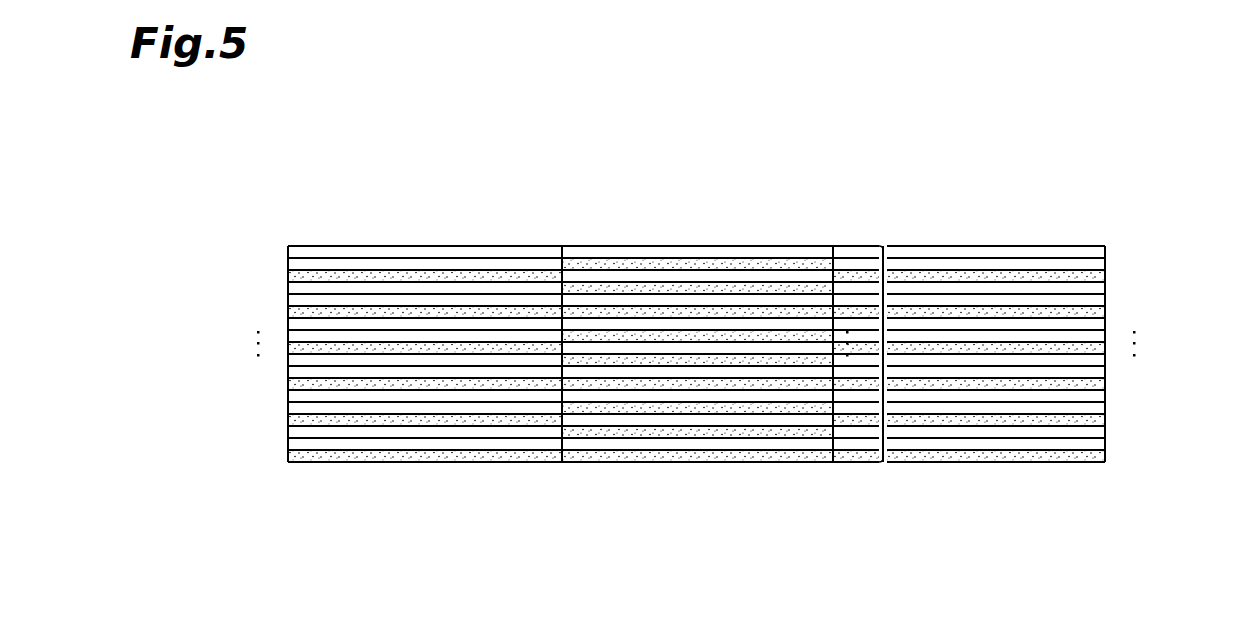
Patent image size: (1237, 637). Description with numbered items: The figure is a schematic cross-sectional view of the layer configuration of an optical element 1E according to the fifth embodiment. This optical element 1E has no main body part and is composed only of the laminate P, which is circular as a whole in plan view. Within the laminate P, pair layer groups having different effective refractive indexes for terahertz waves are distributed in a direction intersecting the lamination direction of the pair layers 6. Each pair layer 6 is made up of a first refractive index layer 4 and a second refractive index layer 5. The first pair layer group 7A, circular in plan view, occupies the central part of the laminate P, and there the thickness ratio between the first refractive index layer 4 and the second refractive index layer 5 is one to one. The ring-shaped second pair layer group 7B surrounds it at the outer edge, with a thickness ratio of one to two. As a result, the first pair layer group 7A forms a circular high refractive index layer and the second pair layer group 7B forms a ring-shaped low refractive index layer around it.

The optical element 1E is at (346, 212).
The laminate P is at (209, 271).
The first refractive index layer 4 is at (415, 278).
The second refractive index layer 5 is at (457, 268).
The pair layer 6 is at (279, 246).
The first pair layer group 7A is at (888, 355).
The second pair layer group 7B is at (234, 246).